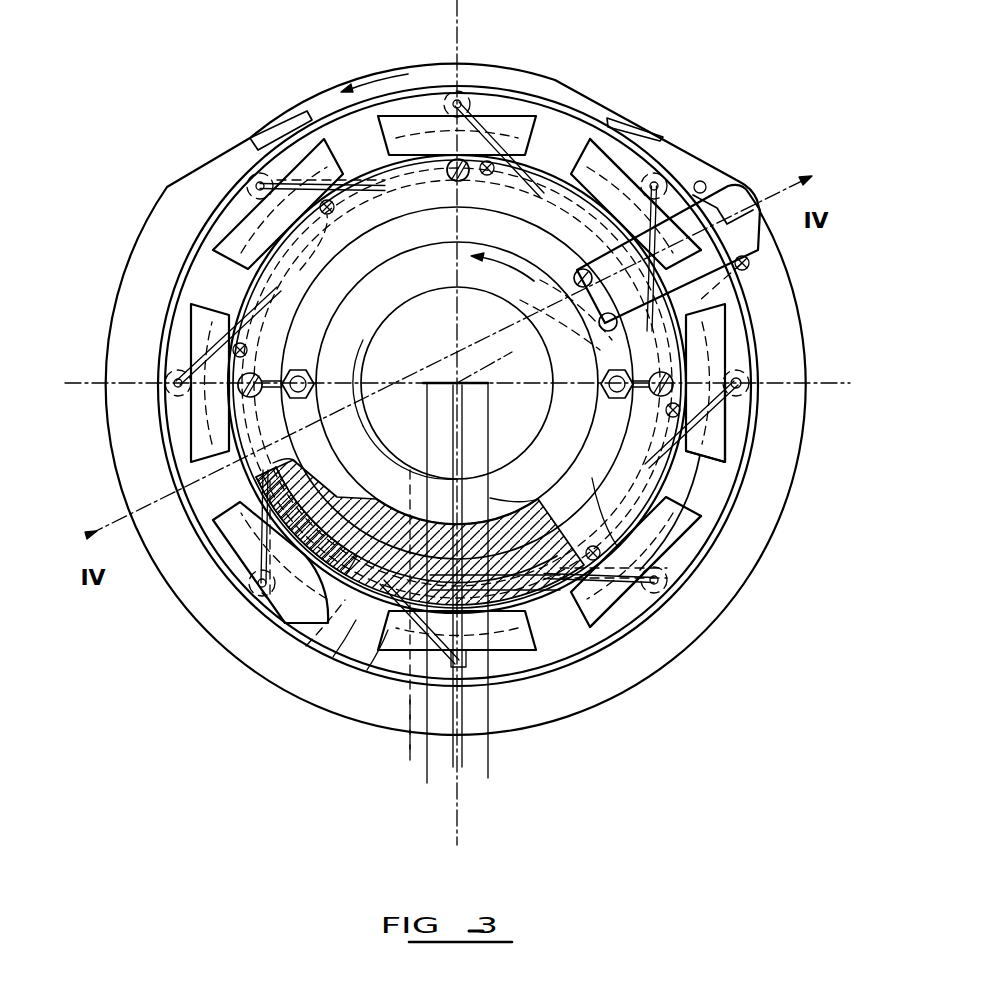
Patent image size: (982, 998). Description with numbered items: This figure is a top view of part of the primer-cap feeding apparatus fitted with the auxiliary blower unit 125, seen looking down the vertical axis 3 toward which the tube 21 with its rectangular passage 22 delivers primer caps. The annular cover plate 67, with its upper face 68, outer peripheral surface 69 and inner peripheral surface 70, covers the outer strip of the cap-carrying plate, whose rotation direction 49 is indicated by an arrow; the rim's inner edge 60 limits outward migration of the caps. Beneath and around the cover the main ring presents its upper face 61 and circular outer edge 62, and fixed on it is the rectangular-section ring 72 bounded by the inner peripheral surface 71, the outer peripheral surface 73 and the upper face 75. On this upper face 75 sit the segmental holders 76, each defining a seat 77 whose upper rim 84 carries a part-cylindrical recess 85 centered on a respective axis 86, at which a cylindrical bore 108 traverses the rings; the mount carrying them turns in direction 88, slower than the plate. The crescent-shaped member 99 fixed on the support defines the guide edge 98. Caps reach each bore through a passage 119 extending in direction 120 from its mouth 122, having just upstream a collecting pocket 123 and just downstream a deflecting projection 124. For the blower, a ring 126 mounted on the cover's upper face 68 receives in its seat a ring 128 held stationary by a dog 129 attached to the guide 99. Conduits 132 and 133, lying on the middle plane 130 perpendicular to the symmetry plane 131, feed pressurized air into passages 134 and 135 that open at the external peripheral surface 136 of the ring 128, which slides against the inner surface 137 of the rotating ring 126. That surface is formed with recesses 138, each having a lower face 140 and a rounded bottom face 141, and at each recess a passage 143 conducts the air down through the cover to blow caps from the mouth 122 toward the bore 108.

The vertical axis 3 is at (484, 351).
The tube 21 is at (492, 478).
The passage 22 is at (463, 455).
The rotation direction 49 is at (506, 257).
The inner edge 60 is at (338, 253).
The upper face 61 is at (517, 70).
The circular outer edge 62 is at (566, 83).
The cover plate 67 is at (353, 358).
The upper face 68 is at (396, 298).
The outer peripheral surface 69 is at (670, 473).
The inner peripheral surface 70 is at (367, 412).
The inner peripheral surface 71 is at (598, 498).
The rectangular-section ring 72 is at (713, 502).
The outer peripheral surface 73 is at (703, 548).
The upper face 75 is at (718, 288).
The segmental holder 76 is at (718, 323).
The seat 77 is at (750, 402).
The upper rim 84 is at (723, 437).
The recess 85 is at (750, 360).
The axis 86 is at (667, 590).
The rotation direction 88 is at (385, 73).
The guide edge 98 is at (191, 258).
The crescent-shaped member 99 is at (122, 306).
The cylindrical bore 108 is at (262, 184).
The passage 119 is at (410, 728).
The extension direction 120 is at (475, 668).
The mouth 122 is at (410, 683).
The pocket 123 is at (306, 646).
The projection 124 is at (406, 578).
The blower unit 125 is at (324, 341).
The ring 126 is at (284, 622).
The ring 128 is at (371, 264).
The dog 129 is at (730, 186).
The middle plane 130 is at (818, 392).
The plane 131 is at (460, 806).
The conduit 132 is at (312, 399).
The conduit 133 is at (602, 398).
The passage 134 is at (324, 358).
The passage 135 is at (606, 352).
The external peripheral surface 136 is at (333, 657).
The inner surface 137 is at (295, 461).
The recess 138 is at (366, 501).
The lower face 140 is at (489, 498).
The rounded bottom face 141 is at (334, 487).
The passage 143 is at (367, 670).